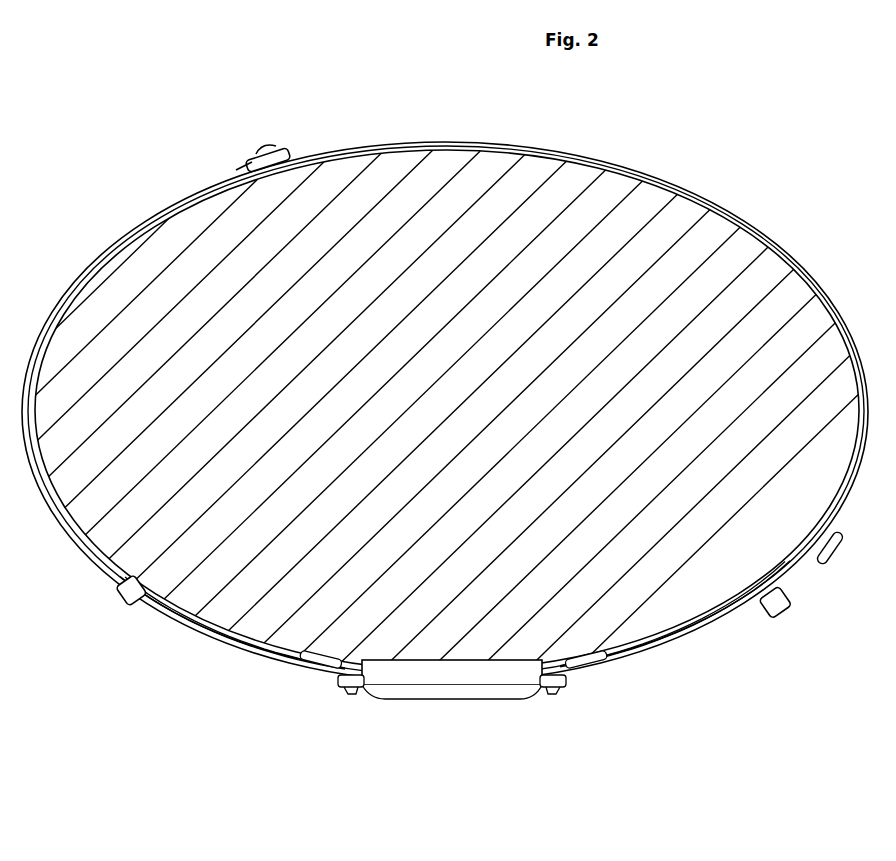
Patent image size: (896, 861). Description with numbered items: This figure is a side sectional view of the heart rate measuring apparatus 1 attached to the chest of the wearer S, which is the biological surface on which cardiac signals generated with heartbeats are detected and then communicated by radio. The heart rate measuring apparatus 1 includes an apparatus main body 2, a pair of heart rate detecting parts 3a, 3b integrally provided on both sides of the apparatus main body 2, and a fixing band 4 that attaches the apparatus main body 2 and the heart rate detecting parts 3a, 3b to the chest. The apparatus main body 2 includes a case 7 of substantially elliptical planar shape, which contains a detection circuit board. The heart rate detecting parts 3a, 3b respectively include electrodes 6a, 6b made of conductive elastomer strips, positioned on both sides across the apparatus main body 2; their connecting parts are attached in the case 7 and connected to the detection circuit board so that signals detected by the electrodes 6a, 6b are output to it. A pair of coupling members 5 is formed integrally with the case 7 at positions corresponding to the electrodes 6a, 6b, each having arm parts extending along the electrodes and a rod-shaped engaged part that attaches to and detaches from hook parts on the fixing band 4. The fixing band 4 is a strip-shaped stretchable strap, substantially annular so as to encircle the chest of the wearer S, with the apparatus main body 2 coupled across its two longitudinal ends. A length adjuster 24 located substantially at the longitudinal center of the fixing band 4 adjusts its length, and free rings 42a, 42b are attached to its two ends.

The heart rate measuring apparatus 1 is at (572, 743).
The apparatus main body 2 is at (427, 702).
The heart rate detecting part 3a is at (689, 624).
The heart rate detecting part 3b is at (232, 618).
The fixing band 4 is at (826, 572).
The coupling member 5 is at (350, 692).
The electrode 6a is at (650, 645).
The electrode 6b is at (298, 648).
The case 7 is at (477, 701).
The length adjuster 24 is at (287, 150).
The free ring 42a is at (781, 621).
The free ring 42b is at (128, 606).
The wearer S is at (655, 192).